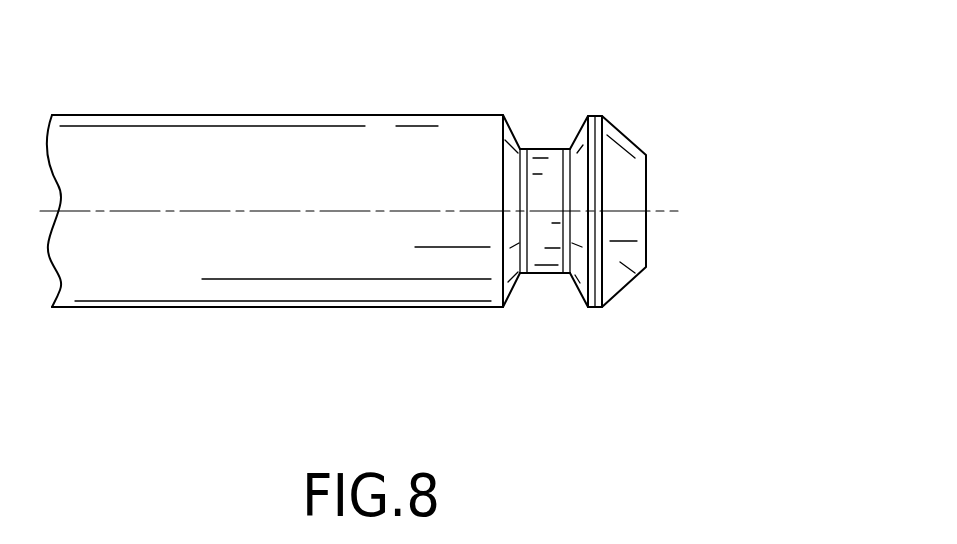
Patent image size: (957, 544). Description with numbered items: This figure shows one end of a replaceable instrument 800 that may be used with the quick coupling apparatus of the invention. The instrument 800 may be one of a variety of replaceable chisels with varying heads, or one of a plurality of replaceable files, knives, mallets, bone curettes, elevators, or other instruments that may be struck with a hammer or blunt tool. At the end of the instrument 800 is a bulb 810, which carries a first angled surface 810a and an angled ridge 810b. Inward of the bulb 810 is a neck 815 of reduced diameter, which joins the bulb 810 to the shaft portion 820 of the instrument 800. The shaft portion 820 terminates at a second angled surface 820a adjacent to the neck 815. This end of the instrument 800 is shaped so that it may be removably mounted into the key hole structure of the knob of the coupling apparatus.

The instrument 800 is at (663, 113).
The bulb 810 is at (638, 268).
The first angled surface 810a is at (571, 283).
The angled ridge 810b is at (594, 116).
The neck 815 is at (552, 236).
The shaft portion 820 is at (249, 279).
The second angled surface 820a is at (511, 288).